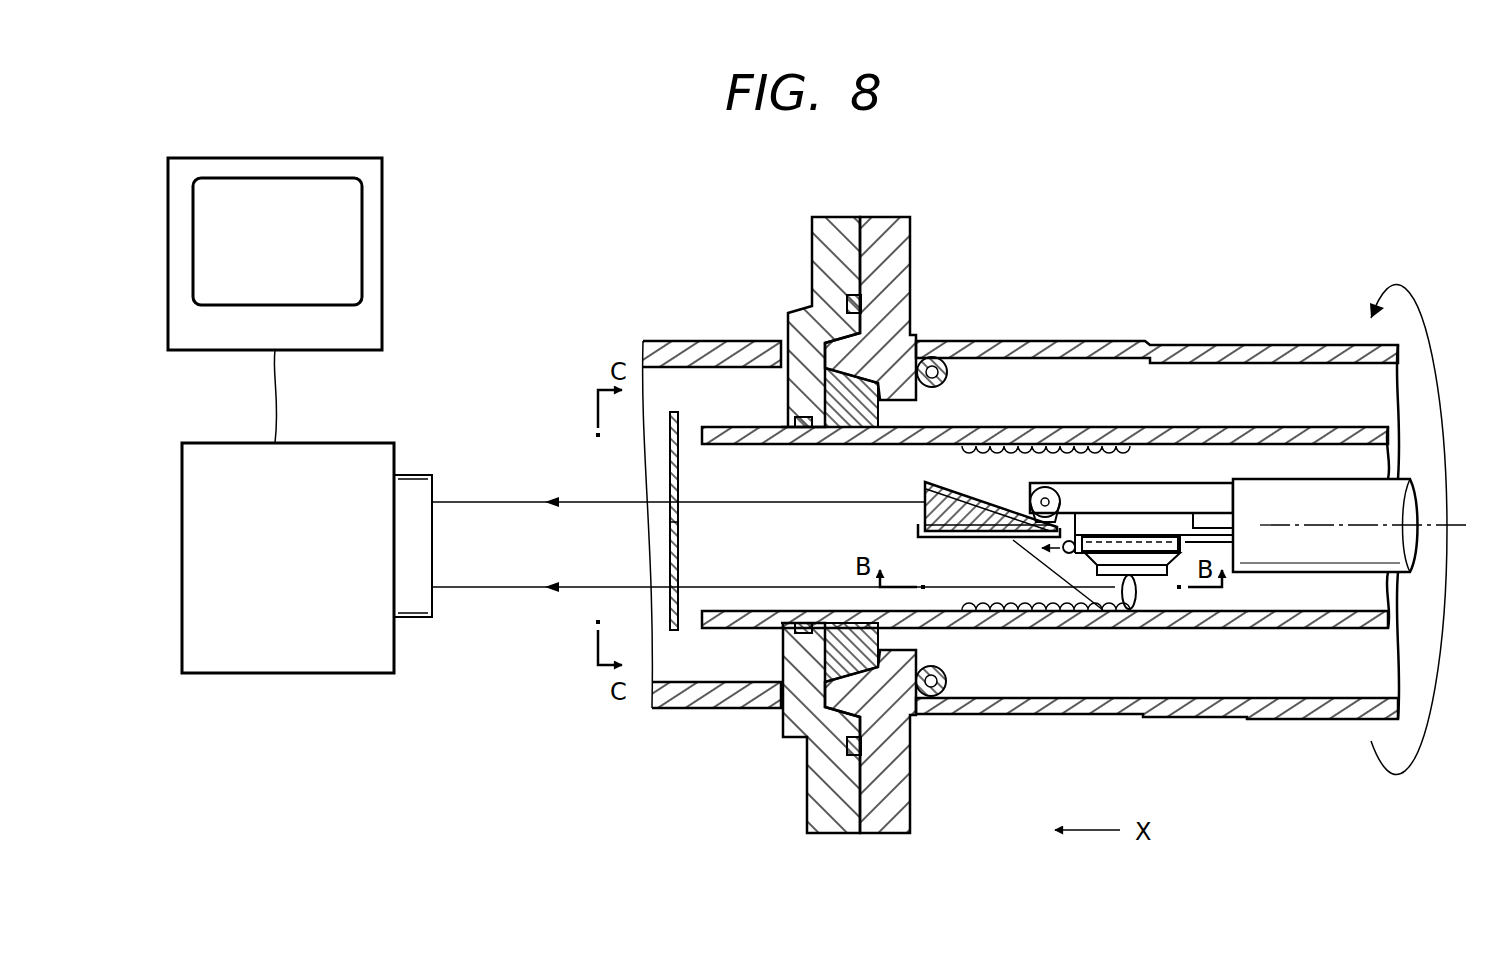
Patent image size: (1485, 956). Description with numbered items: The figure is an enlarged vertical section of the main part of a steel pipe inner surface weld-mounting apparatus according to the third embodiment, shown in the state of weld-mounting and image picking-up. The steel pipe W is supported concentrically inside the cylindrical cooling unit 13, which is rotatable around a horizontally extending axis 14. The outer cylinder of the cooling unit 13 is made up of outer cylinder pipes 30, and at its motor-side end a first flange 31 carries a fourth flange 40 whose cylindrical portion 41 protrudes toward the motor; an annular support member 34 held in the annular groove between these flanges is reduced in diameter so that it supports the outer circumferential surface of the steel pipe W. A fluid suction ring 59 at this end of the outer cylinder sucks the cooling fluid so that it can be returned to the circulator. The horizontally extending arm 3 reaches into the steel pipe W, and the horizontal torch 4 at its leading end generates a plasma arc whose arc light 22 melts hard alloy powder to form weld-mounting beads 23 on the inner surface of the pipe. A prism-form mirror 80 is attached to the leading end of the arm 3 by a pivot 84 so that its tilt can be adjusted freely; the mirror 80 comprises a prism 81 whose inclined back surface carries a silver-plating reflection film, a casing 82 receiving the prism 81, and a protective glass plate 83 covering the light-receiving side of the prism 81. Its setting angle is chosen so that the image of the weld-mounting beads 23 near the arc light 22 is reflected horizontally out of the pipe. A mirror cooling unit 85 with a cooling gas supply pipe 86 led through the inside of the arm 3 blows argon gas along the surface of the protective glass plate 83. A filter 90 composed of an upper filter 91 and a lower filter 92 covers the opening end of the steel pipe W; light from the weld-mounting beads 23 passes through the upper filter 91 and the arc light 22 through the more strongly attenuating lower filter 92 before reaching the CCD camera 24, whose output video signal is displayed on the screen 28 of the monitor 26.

The arm 3 is at (1283, 479).
The horizontal torch 4 is at (1195, 572).
The cooling unit 13 is at (1113, 336).
The axis 14 is at (1437, 527).
The arc light 22 is at (1150, 570).
The weld-mounting beads 23 is at (1127, 610).
The CCD camera 24 is at (313, 673).
The monitor 26 is at (382, 190).
The screen 28 is at (362, 272).
The outer cylinder pipes 30 is at (1330, 345).
The first flange 31 is at (914, 240).
The annular support members 34 is at (868, 362).
The fourth flange 40 is at (810, 240).
The cylindrical portion 41 is at (680, 341).
The fluid suction ring 59 is at (934, 698).
The prism-form mirror 80 is at (943, 476).
The prism 81 is at (925, 500).
The casing 82 is at (997, 510).
The protective glass plate 83 is at (972, 538).
The pivot 84 is at (1058, 497).
The mirror cooling unit 85 is at (1067, 558).
The cooling gas supply pipe 86 is at (1212, 538).
The filter 90 is at (673, 640).
The upper filter 91 is at (670, 466).
The lower filter 92 is at (670, 567).
The steel pipe W is at (1315, 719).